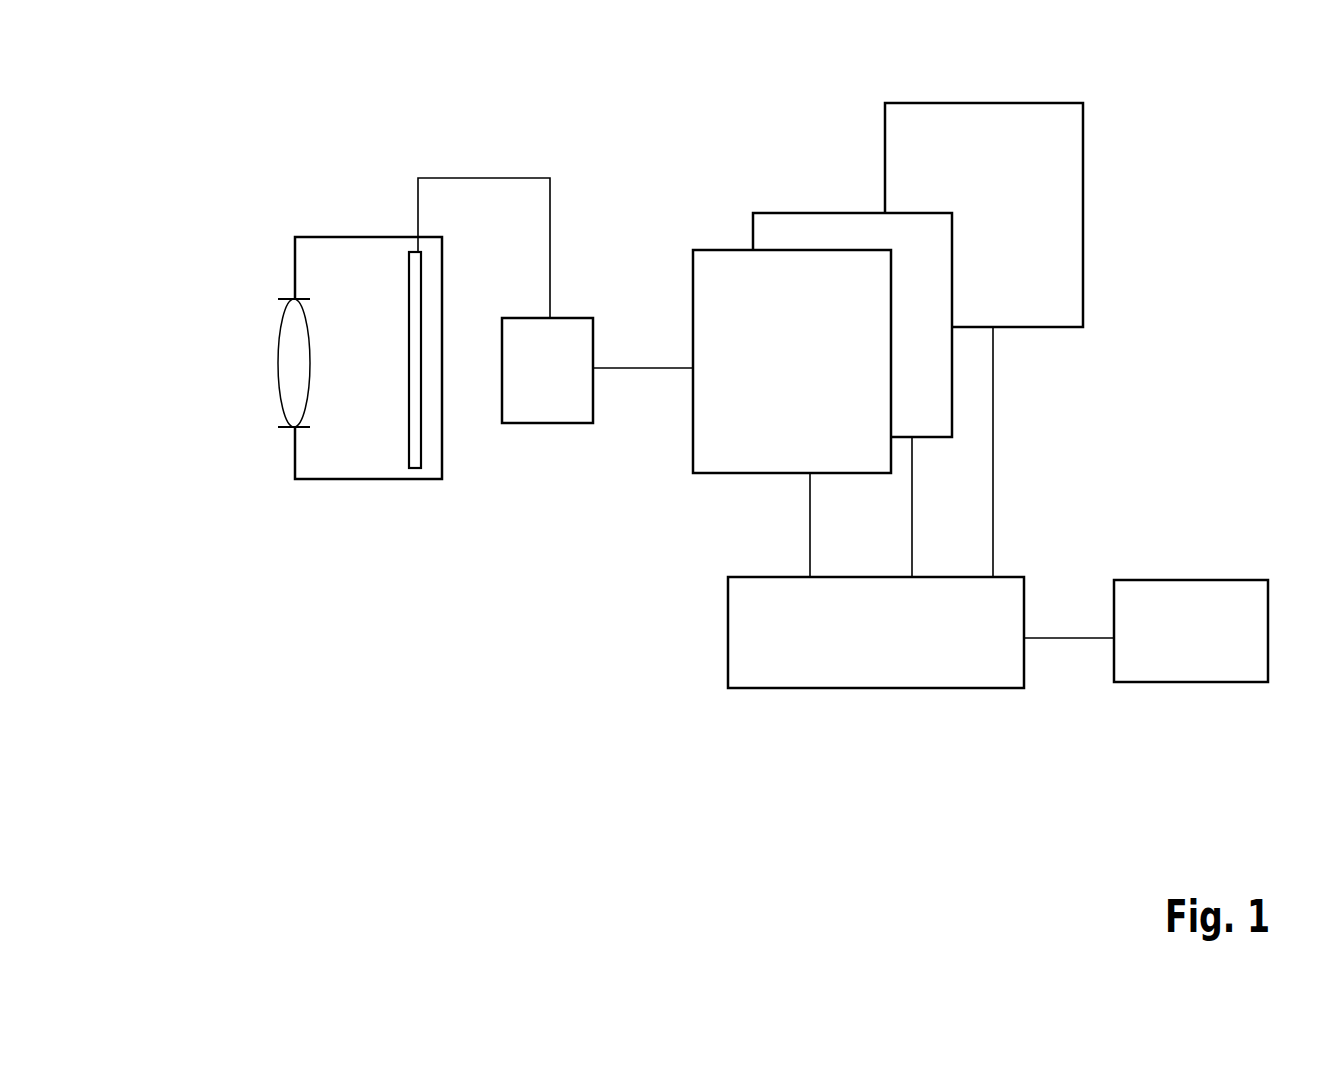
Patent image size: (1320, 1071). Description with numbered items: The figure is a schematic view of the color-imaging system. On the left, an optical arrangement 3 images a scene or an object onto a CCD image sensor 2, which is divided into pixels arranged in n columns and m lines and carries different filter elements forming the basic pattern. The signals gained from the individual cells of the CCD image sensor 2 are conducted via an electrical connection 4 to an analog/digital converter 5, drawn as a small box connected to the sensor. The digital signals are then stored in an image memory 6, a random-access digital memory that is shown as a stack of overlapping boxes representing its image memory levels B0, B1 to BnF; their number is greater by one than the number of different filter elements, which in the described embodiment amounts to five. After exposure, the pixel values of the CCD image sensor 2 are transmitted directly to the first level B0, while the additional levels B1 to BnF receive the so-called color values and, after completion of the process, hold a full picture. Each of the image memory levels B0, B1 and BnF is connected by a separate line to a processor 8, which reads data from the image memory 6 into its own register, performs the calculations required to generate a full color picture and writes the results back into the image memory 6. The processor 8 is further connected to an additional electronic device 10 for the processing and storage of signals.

The CCD image sensor 2 is at (417, 420).
The optical arrangement 3 is at (292, 382).
The electrical connection 4 is at (473, 178).
The analog/digital converter 5 is at (575, 325).
The image memory 6 is at (877, 248).
The processor 8 is at (746, 671).
The output unit 10 is at (1128, 670).
The first image memory level B0 is at (717, 258).
The image memory level B1 is at (793, 222).
The last image memory level BnF is at (908, 138).